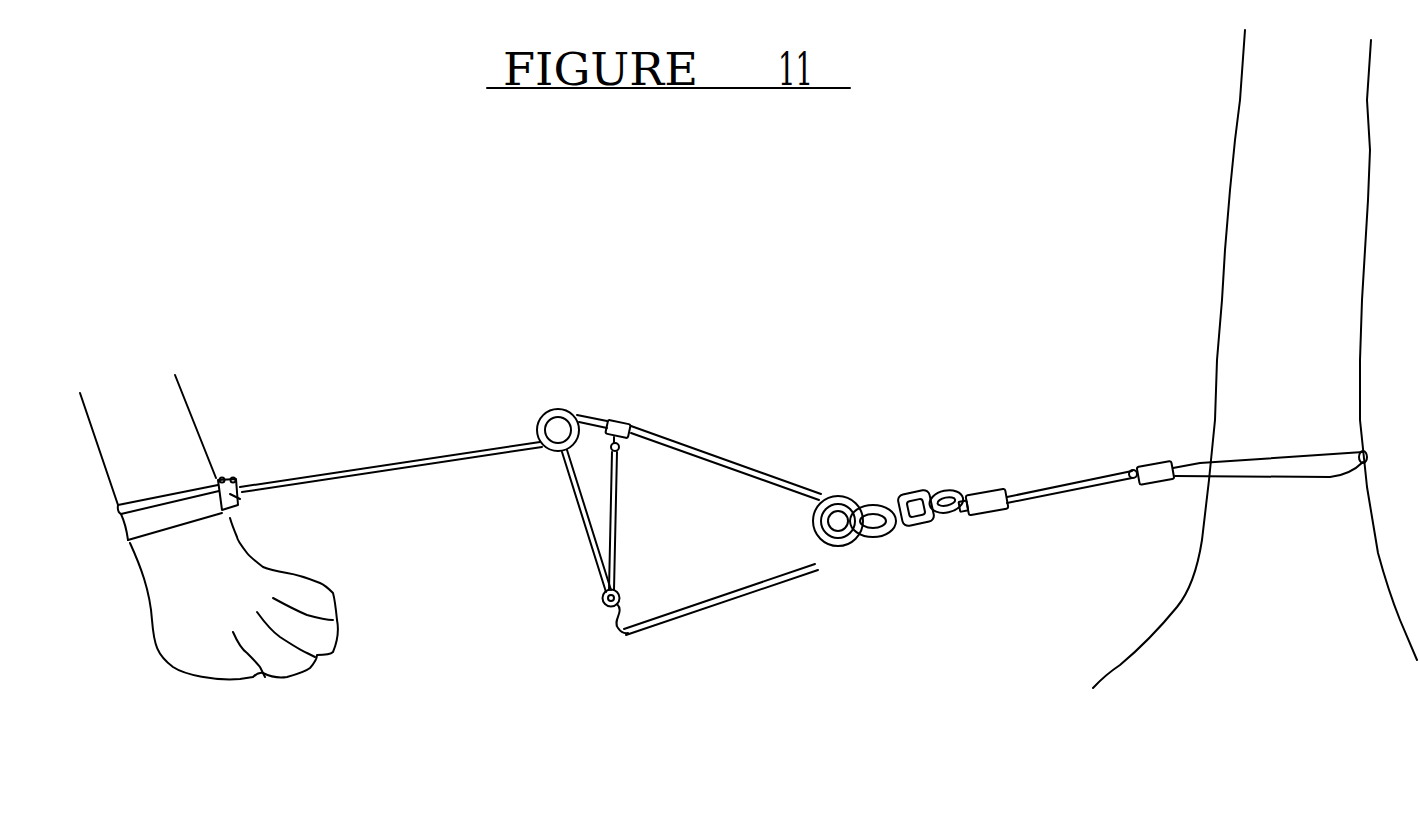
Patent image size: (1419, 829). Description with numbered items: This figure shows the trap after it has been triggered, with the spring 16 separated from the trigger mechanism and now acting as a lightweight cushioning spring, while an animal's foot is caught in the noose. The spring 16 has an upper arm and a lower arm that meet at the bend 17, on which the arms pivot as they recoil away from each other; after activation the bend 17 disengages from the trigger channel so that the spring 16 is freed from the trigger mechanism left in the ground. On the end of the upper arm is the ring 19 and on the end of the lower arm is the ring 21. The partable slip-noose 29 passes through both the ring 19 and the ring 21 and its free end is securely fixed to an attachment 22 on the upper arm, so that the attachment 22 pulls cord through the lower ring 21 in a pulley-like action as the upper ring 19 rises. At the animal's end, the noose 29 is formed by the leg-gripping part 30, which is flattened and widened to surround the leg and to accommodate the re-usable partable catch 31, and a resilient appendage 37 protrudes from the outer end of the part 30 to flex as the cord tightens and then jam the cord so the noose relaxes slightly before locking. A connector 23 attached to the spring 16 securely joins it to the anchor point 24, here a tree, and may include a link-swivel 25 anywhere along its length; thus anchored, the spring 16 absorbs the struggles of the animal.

The spring 16 is at (853, 543).
The bend 17 is at (625, 636).
The ring 19 is at (558, 409).
The ring 21 is at (600, 605).
The attachment 22 is at (630, 423).
The connector 23 is at (1063, 492).
The anchor point 24 is at (1265, 256).
The link-swivel 25 is at (905, 490).
The partable slip-noose 29 is at (445, 450).
The leg-gripping part 30 is at (197, 518).
The partable catch 31 is at (227, 478).
The resilient appendage 37 is at (232, 498).